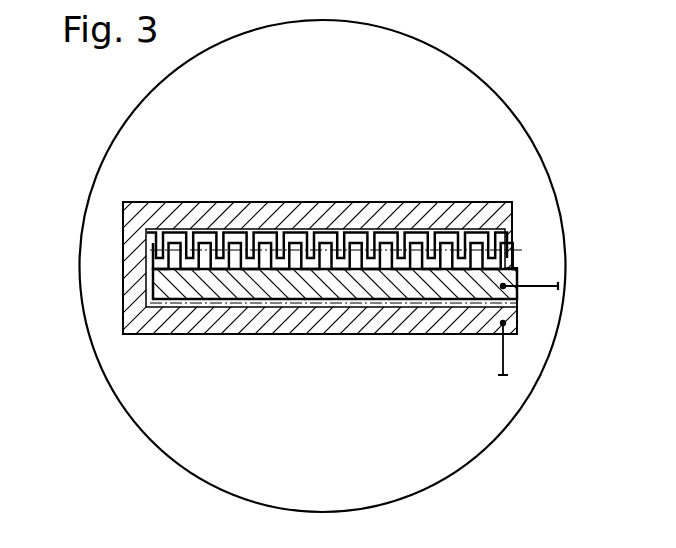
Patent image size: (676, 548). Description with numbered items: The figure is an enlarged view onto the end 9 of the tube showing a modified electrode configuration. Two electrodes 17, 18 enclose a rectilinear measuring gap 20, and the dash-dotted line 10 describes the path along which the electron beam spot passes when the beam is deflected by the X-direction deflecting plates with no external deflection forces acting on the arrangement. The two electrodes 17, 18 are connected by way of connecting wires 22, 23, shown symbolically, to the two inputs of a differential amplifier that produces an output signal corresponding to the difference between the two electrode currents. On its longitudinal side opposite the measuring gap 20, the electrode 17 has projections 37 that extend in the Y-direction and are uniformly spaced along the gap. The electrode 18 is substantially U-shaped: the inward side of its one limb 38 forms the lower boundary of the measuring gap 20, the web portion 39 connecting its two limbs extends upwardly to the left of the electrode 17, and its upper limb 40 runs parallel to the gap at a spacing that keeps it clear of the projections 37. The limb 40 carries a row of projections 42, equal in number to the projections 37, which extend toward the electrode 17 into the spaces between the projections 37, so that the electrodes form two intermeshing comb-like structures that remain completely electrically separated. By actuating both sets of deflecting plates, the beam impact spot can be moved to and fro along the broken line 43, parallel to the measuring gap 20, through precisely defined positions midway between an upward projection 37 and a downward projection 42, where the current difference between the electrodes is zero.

The end of the tube 9 is at (472, 90).
The dash-dotted line 10 is at (517, 303).
The electrode 17 is at (370, 288).
The electrode 18 is at (240, 334).
The measuring gap 20 is at (312, 306).
The connecting wire 22 is at (547, 283).
The connecting wire 23 is at (497, 370).
The projections 37 is at (284, 246).
The limb 38 is at (287, 334).
The web portion 39 is at (130, 275).
The upper limb 40 is at (219, 212).
The projections 42 is at (200, 262).
The broken line 43 is at (523, 251).